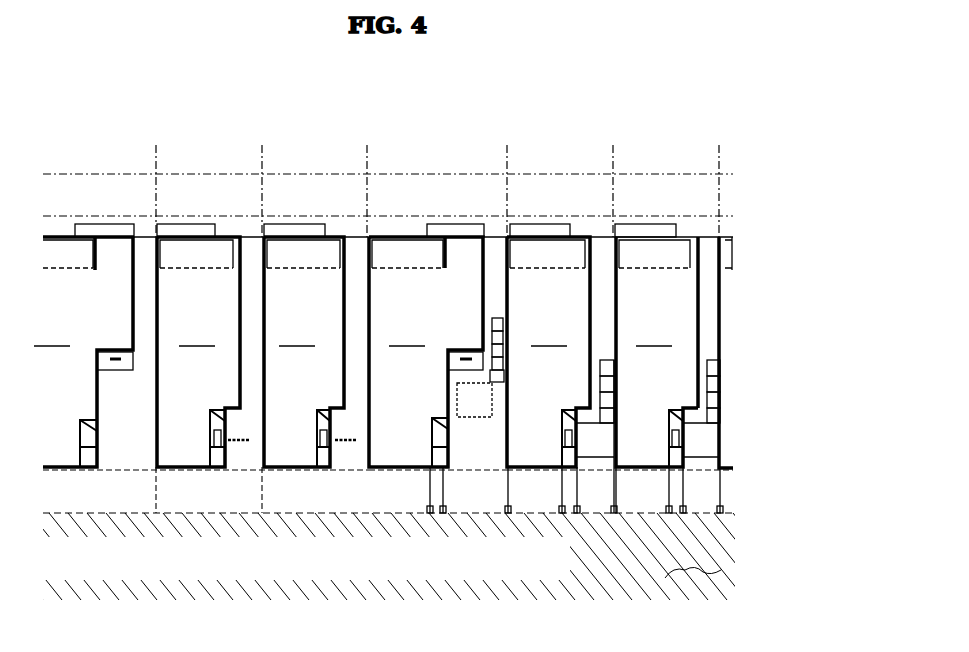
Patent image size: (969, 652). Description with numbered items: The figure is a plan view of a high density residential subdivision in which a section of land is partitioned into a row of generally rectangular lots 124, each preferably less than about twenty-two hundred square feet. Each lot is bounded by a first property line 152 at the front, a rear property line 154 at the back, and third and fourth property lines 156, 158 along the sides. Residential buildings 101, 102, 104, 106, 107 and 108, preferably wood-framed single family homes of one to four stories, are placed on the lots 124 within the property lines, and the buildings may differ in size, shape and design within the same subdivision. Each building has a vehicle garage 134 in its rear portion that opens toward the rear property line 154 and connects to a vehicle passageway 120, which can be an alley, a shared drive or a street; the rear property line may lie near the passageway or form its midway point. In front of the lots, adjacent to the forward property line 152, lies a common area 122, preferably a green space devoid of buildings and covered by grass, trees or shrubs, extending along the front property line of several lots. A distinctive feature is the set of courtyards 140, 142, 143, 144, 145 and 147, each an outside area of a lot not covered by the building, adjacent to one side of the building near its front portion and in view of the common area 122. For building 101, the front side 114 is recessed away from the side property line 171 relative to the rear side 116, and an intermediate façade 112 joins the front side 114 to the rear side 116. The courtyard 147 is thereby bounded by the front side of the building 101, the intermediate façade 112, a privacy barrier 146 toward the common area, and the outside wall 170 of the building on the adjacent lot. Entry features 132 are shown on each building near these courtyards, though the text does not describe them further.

The building 101 is at (656, 345).
The building 102 is at (560, 368).
The building 104 is at (436, 345).
The building 106 is at (304, 345).
The building 107 is at (198, 345).
The building 108 is at (84, 345).
The intermediate façade 112 is at (685, 402).
The front side 114 is at (658, 458).
The rear side 116 is at (702, 298).
The vehicle passageway 120 is at (603, 162).
The common area 122 is at (548, 587).
The lots 124 is at (195, 492).
The entry 132 is at (660, 417).
The vehicle garage 134 is at (355, 254).
The courtyard 140 is at (130, 427).
The courtyard 142 is at (243, 453).
The courtyard 143 is at (348, 455).
The courtyard 144 is at (480, 457).
The courtyard 145 is at (598, 468).
The privacy barrier 146 is at (698, 513).
The courtyard 147 is at (700, 458).
The first property line 152 is at (293, 505).
The rear property line 154 is at (320, 170).
The third property line 156 is at (255, 202).
The fourth property line 158 is at (368, 207).
The outside wall 170 is at (727, 430).
The side property line 171 is at (723, 226).